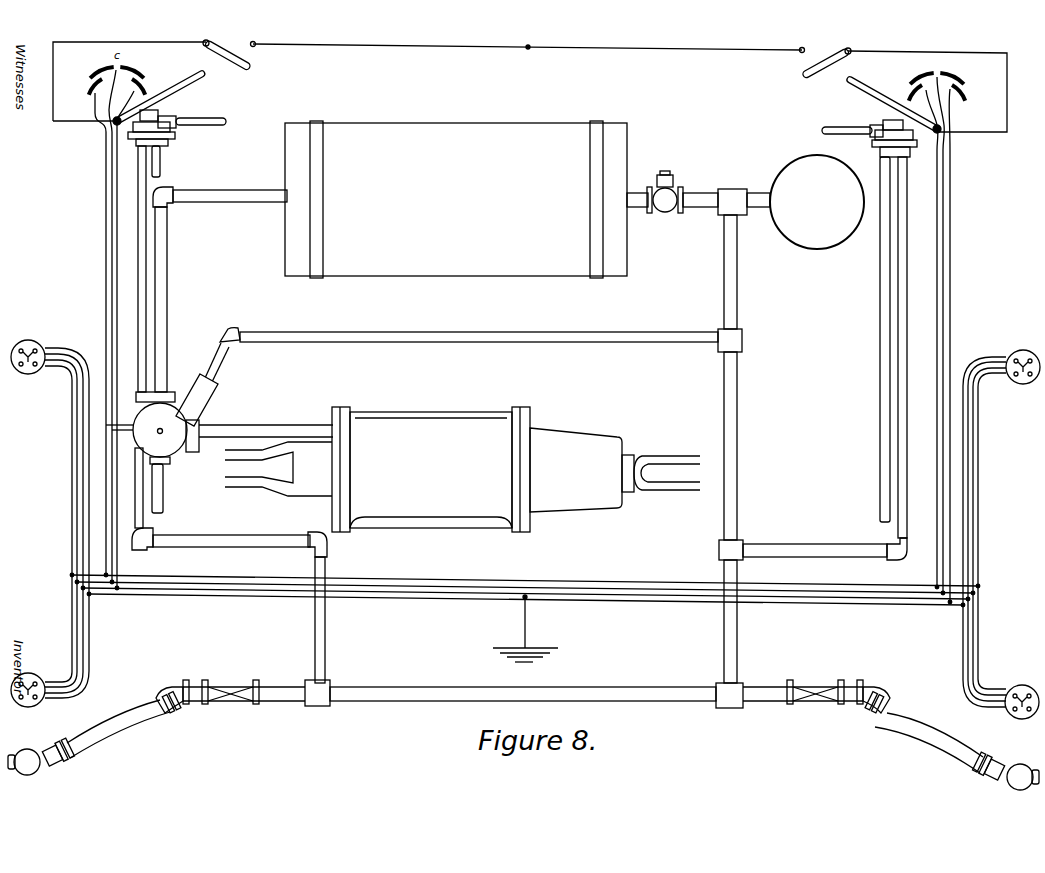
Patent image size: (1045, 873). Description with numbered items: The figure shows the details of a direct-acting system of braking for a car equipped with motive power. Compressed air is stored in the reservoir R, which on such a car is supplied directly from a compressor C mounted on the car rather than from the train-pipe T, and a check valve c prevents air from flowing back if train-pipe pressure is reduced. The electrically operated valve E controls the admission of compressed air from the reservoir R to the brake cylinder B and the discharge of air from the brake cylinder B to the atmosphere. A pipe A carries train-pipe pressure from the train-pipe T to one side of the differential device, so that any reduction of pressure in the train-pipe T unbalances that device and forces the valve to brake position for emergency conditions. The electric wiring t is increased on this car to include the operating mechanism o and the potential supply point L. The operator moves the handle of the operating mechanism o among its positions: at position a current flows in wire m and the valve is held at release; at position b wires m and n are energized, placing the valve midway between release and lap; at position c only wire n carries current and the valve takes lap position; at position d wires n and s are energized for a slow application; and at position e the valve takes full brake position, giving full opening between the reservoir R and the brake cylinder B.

The potential supply point L is at (528, 31).
The reservoir R is at (456, 199).
The compressor C is at (805, 233).
The pipe A is at (462, 348).
The electrically operated valve E is at (162, 443).
The brake cylinder B is at (516, 469).
The electric wiring t is at (525, 586).
The train-pipe T is at (523, 735).
The c position c is at (672, 192).
The a position a is at (149, 81).
The b position b is at (132, 66).
The d position d is at (102, 65).
The e position e is at (83, 83).
The wire s is at (99, 335).
The wire n is at (115, 327).
The wire m is at (128, 340).
The operating mechanism o is at (159, 97).